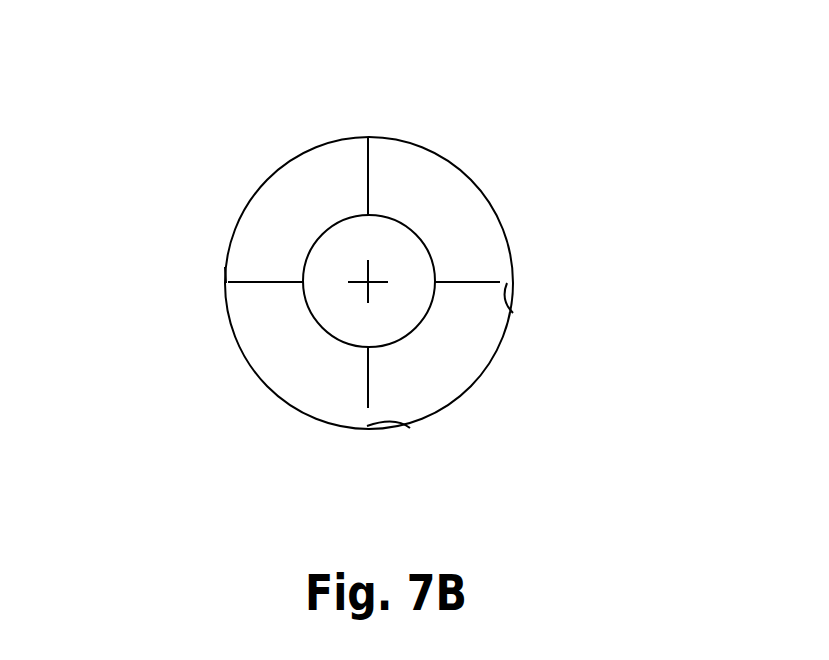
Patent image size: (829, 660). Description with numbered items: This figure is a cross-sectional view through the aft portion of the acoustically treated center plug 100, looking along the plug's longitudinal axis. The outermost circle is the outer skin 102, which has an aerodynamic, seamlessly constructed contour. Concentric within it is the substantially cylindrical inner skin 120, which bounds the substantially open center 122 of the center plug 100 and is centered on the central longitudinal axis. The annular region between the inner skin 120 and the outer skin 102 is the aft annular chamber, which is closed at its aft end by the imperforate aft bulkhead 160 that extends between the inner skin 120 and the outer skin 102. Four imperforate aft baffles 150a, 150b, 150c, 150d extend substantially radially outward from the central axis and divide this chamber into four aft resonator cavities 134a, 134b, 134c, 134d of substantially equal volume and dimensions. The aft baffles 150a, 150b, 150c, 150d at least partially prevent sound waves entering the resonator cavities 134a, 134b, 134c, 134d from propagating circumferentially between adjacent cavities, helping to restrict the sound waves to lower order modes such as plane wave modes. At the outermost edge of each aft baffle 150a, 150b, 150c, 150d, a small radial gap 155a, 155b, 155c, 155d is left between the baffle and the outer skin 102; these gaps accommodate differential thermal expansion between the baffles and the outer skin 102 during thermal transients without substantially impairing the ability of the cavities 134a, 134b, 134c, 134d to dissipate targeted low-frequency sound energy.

The center plug 100 is at (536, 105).
The outer skin 102 is at (502, 222).
The inner skin 120 is at (427, 317).
The open center 122 is at (390, 253).
The aft resonator cavity 134a is at (283, 372).
The aft resonator cavity 134b is at (285, 210).
The aft resonator cavity 134c is at (435, 175).
The aft resonator cavity 134d is at (450, 375).
The aft baffle 150a is at (257, 283).
The aft baffle 150b is at (360, 173).
The aft baffle 150c is at (473, 278).
The aft baffle 150d is at (366, 407).
The gap 155a is at (227, 275).
The gap 155b is at (370, 147).
The gap 155c is at (513, 313).
The gap 155d is at (410, 428).
The aft bulkhead 160 is at (453, 218).